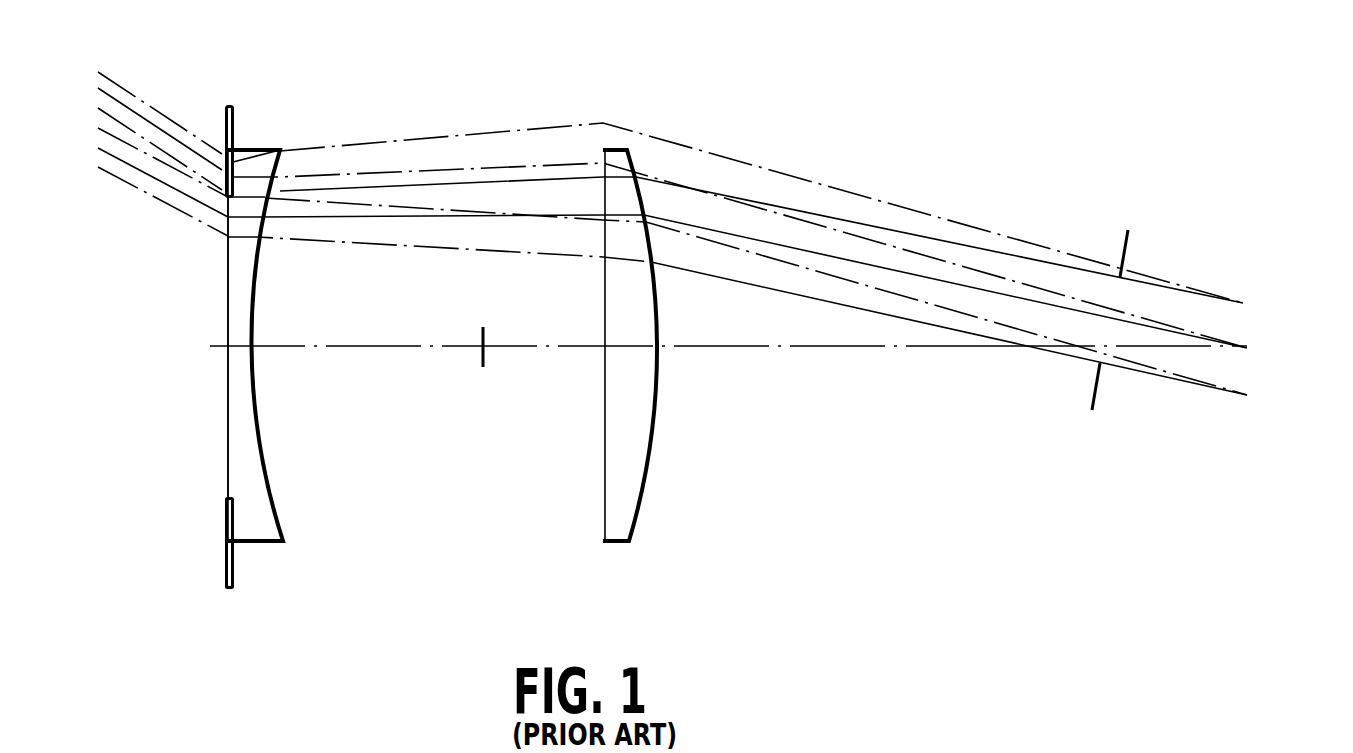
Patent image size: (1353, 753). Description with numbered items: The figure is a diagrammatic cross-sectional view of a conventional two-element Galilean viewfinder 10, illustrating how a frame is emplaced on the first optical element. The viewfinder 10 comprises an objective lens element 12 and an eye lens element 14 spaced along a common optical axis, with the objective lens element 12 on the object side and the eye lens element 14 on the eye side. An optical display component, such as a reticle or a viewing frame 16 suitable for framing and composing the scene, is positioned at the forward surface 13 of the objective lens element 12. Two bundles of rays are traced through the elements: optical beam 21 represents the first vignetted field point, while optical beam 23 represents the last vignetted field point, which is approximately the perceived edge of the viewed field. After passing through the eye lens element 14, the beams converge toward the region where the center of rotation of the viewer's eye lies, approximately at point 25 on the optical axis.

The Galilean viewfinder 10 is at (741, 368).
The objective lens element 12 is at (287, 543).
The forward surface 13 is at (228, 455).
The eye lens element 14 is at (630, 542).
The viewing frame 16 is at (230, 588).
The optical beam 21 is at (90, 120).
The optical beam 23 is at (90, 53).
The point 25 is at (1247, 349).